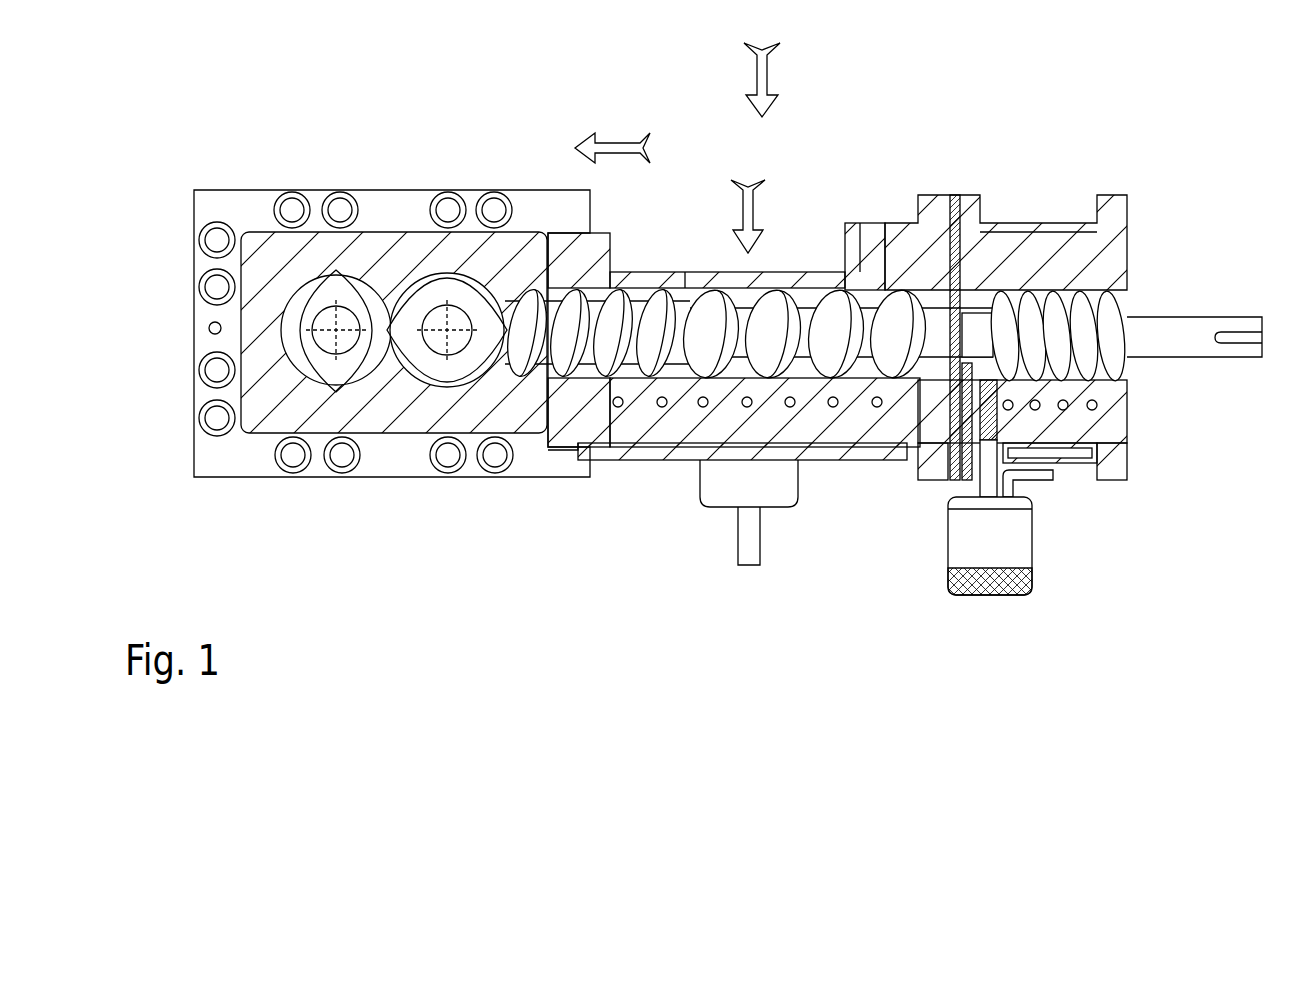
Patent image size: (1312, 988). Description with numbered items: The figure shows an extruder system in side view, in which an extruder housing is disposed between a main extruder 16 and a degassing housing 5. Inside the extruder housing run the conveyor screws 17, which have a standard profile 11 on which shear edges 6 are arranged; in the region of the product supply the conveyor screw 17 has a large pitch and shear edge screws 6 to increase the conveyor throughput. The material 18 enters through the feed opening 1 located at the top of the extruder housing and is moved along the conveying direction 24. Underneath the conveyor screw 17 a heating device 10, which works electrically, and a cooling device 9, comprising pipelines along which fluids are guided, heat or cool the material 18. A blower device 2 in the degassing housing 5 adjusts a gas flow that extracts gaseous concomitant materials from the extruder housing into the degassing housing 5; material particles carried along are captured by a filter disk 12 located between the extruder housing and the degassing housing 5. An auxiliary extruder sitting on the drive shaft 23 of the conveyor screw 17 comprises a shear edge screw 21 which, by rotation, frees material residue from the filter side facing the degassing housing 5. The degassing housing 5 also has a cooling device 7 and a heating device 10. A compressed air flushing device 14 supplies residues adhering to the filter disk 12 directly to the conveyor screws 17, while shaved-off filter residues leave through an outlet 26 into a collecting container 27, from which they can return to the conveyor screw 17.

The feed opening 1 is at (756, 216).
The blower device 2 is at (945, 375).
The degassing housing 5 is at (1110, 217).
The shear edges 6 is at (703, 355).
The cooling device 7 is at (1095, 407).
The cooling device 9 is at (710, 395).
The heating device 10 is at (835, 452).
The standard profile 11 is at (640, 400).
The filter disk 12 is at (958, 290).
The compressed air flushing device 14 is at (965, 385).
The main extruder 16 is at (392, 208).
The conveyor screw 17 is at (553, 383).
The material 18 is at (761, 58).
The shear edge screw 21 is at (1037, 305).
The drive shaft 23 is at (1185, 318).
The conveying direction 24 is at (612, 130).
The outlet 26 is at (995, 425).
The collecting container 27 is at (985, 550).